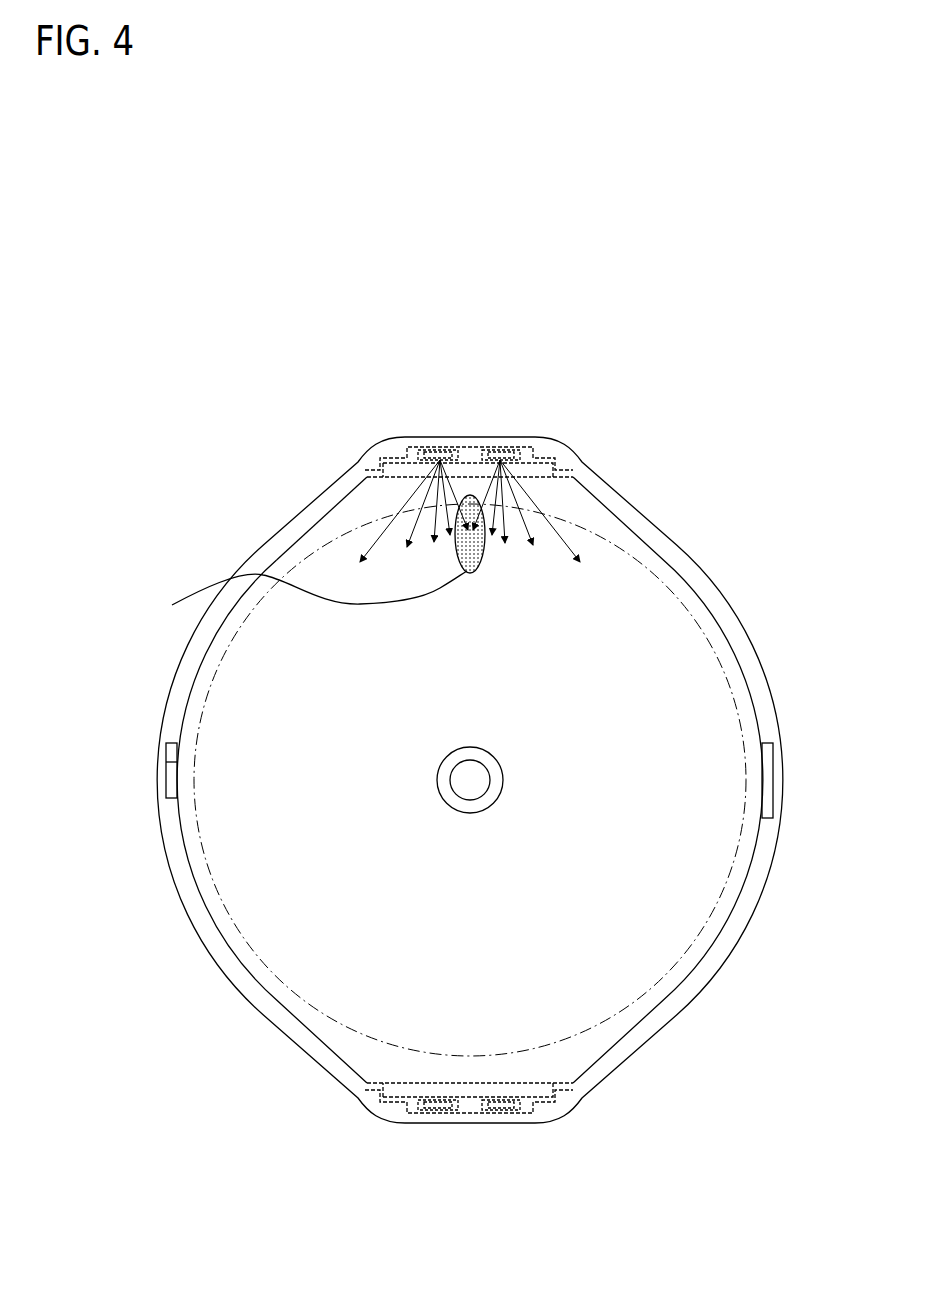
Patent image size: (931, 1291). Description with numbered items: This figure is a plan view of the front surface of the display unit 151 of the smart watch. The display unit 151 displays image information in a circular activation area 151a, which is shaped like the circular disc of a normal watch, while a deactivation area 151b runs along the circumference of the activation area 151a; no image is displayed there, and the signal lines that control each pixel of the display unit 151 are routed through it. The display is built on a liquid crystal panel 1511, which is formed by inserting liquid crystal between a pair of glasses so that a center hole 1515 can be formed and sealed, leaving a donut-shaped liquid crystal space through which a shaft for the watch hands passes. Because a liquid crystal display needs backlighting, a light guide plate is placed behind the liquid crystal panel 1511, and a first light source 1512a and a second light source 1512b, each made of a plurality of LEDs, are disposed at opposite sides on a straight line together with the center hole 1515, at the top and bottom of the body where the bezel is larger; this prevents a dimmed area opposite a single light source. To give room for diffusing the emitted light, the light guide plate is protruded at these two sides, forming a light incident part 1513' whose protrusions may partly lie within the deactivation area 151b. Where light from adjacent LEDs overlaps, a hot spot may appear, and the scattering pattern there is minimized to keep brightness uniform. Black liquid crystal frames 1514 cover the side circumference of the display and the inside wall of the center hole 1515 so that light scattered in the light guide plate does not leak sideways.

The display unit 151 is at (187, 450).
The activation area 151a is at (657, 590).
The deactivation area 151b is at (593, 496).
The liquid crystal panel 1511 is at (717, 722).
The first light source 1512a is at (500, 460).
The second light source 1512b is at (500, 1112).
The light incident part 1513' is at (507, 766).
The liquid crystal frame 1514 is at (487, 800).
The center hole 1515 is at (472, 780).